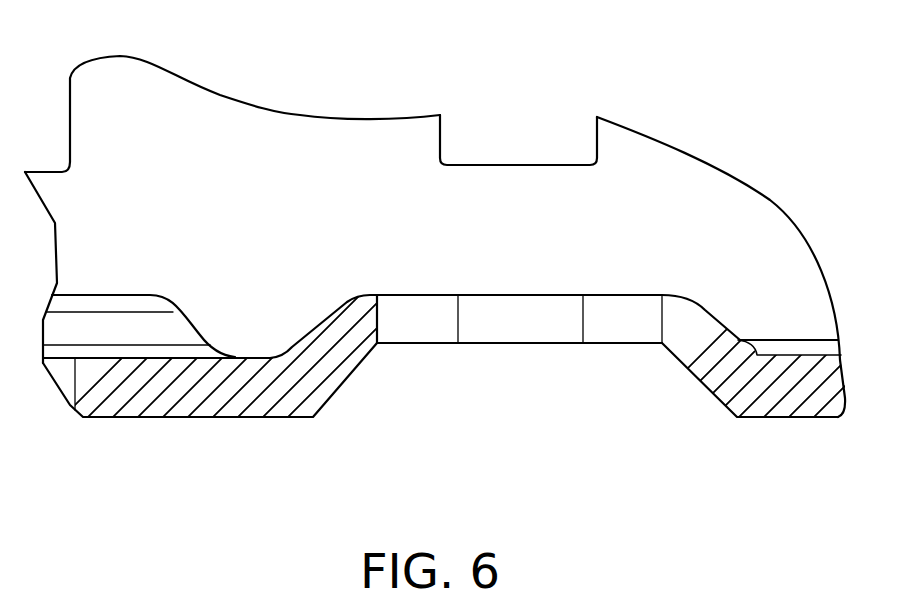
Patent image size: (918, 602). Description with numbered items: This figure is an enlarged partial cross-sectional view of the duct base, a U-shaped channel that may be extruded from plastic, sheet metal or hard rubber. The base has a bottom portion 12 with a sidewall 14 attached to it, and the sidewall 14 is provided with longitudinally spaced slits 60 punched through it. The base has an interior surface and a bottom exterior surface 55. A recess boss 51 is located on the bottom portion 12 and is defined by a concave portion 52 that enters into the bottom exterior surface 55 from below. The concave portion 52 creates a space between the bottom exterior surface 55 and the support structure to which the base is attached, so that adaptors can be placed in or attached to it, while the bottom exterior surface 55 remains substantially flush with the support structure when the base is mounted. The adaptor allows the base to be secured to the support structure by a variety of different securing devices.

The sidewall 14 is at (662, 153).
The slits 60 is at (570, 162).
The bottom exterior surface 55 is at (120, 420).
The recess boss 51 is at (517, 295).
The concave portion 52 is at (507, 346).
The bottom portion 12 is at (780, 385).